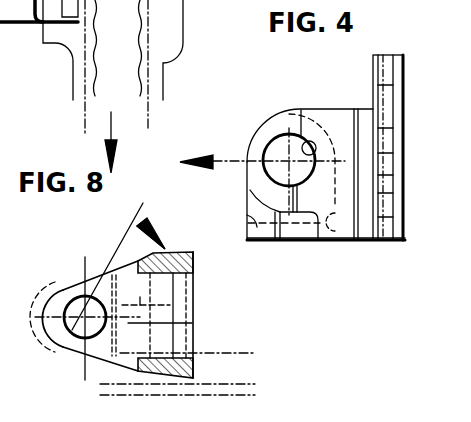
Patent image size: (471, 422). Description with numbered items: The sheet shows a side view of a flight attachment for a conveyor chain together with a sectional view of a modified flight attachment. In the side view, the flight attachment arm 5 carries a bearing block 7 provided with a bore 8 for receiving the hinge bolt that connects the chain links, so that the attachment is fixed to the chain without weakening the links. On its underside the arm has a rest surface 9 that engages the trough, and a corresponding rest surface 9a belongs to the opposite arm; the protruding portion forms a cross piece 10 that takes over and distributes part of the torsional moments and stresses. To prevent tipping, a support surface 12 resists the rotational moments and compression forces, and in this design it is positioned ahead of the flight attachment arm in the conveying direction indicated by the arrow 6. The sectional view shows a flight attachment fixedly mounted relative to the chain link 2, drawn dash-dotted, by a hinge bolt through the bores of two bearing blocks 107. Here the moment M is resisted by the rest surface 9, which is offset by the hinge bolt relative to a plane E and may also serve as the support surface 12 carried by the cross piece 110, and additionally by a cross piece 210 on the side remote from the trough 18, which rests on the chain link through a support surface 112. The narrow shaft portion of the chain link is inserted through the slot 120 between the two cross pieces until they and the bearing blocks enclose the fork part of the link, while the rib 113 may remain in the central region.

In FIG. 8, the chain link 2 is at (51, 52).
In FIG. 4, the flight attachment arm 5 is at (387, 62).
In FIG. 4, the conveying direction arrow 6 is at (240, 157).
In FIG. 8, the conveying direction arrow 6 is at (113, 133).
In FIG. 4, the bearing block 7 is at (247, 142).
In FIG. 8, the bearing block 7 is at (215, 0).
In FIG. 4, the bore 8 is at (303, 137).
In FIG. 8, the bore 8 is at (67, 288).
In FIG. 4, the rest surface 9 is at (390, 243).
In FIG. 8, the rest surface 9a is at (35, 28).
In FIG. 4, the cross piece 10 is at (244, 208).
In FIG. 4, the support surface 12 is at (288, 243).
In FIG. 8, the support surface 12 is at (197, 277).
In FIG. 8, the trough 18 is at (232, 393).
In FIG. 8, the bearing block 107 is at (67, 345).
In FIG. 8, the cross piece 110 is at (160, 374).
In FIG. 8, the support surface 112 is at (181, 273).
In FIG. 8, the rib 113 is at (118, 262).
In FIG. 8, the slot 120 is at (193, 320).
In FIG. 8, the additional cross piece 210 is at (178, 266).
In FIG. 8, the moment M is at (113, 216).
In FIG. 8, the plane E is at (82, 368).